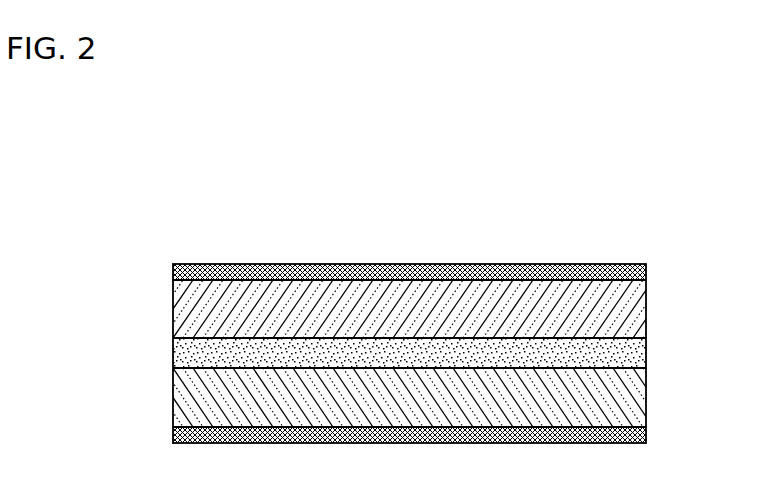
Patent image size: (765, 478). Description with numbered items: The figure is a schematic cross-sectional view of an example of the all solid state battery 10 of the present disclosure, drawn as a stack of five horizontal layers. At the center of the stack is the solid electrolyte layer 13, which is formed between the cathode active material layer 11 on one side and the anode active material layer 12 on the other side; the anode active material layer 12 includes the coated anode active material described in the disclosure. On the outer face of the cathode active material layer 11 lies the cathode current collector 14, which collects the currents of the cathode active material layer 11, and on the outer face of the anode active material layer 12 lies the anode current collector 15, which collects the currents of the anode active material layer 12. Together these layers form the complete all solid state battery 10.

The all solid state battery 10 is at (626, 210).
The cathode active material layer 11 is at (635, 397).
The anode active material layer 12 is at (638, 305).
The solid electrolyte layer 13 is at (633, 352).
The cathode current collector 14 is at (632, 433).
The anode current collector 15 is at (646, 267).